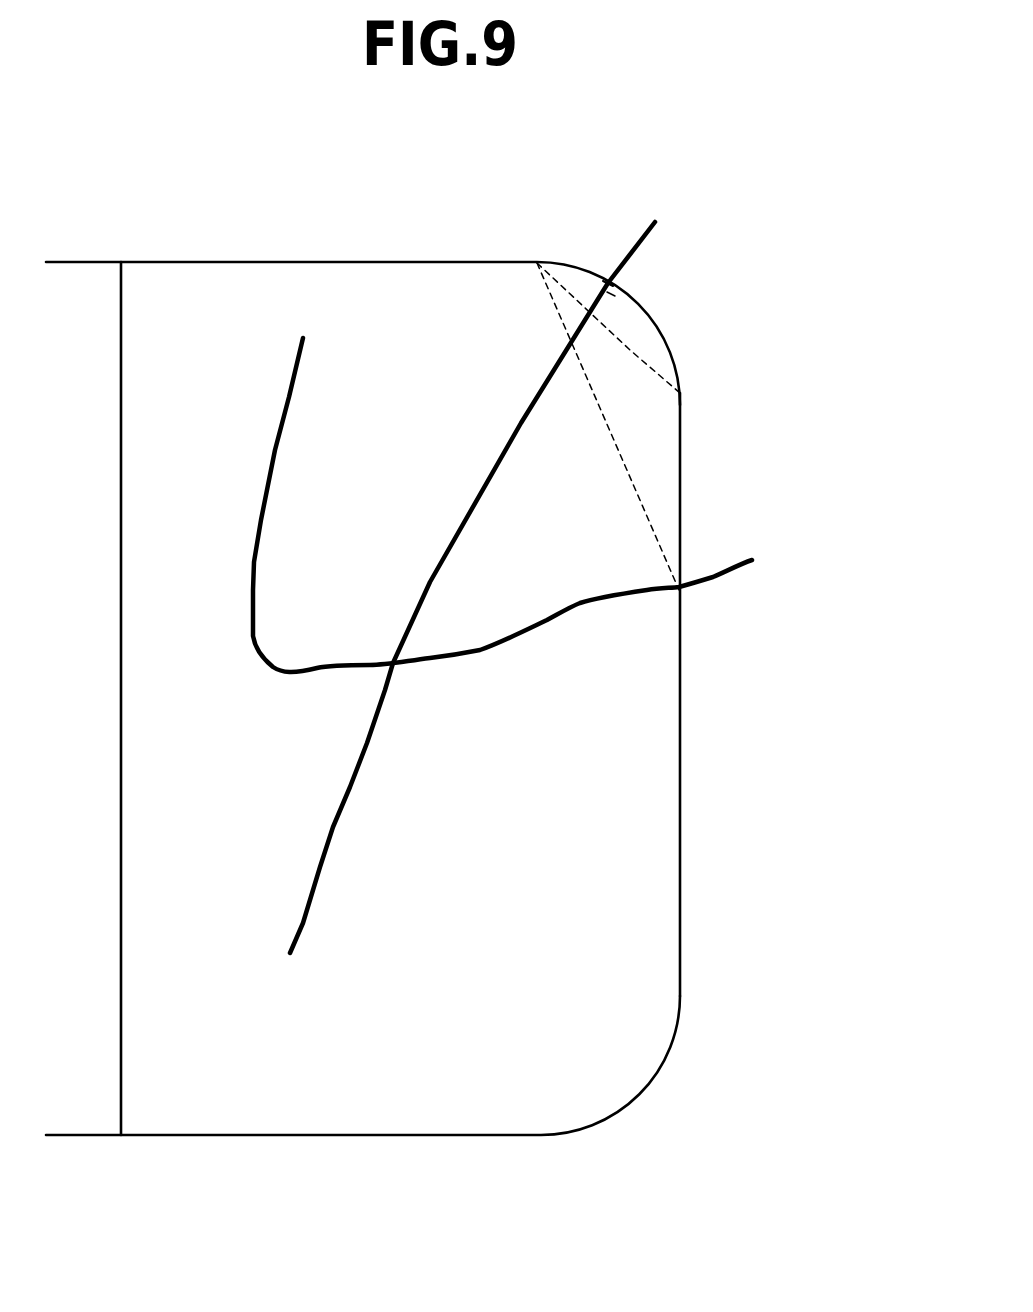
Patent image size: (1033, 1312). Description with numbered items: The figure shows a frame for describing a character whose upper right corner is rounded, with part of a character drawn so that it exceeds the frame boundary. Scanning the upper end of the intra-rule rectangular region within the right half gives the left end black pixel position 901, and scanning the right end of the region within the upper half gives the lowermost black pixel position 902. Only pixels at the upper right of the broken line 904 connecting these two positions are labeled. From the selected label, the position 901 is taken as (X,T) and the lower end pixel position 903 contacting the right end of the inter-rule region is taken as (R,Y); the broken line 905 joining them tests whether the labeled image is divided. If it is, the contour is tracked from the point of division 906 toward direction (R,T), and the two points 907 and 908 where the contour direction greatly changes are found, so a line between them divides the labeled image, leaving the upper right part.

The left end black pixel position 901 is at (537, 262).
The lowermost black pixel position 902 is at (687, 595).
The lower end pixel position 903 is at (685, 388).
The broken line connecting obtained positions 904 is at (635, 482).
The broken line connecting (X,T) and (R,Y) 905 is at (630, 350).
The point of division 906 is at (580, 304).
The contour direction change point 907 is at (597, 287).
The contour direction change point 908 is at (610, 297).